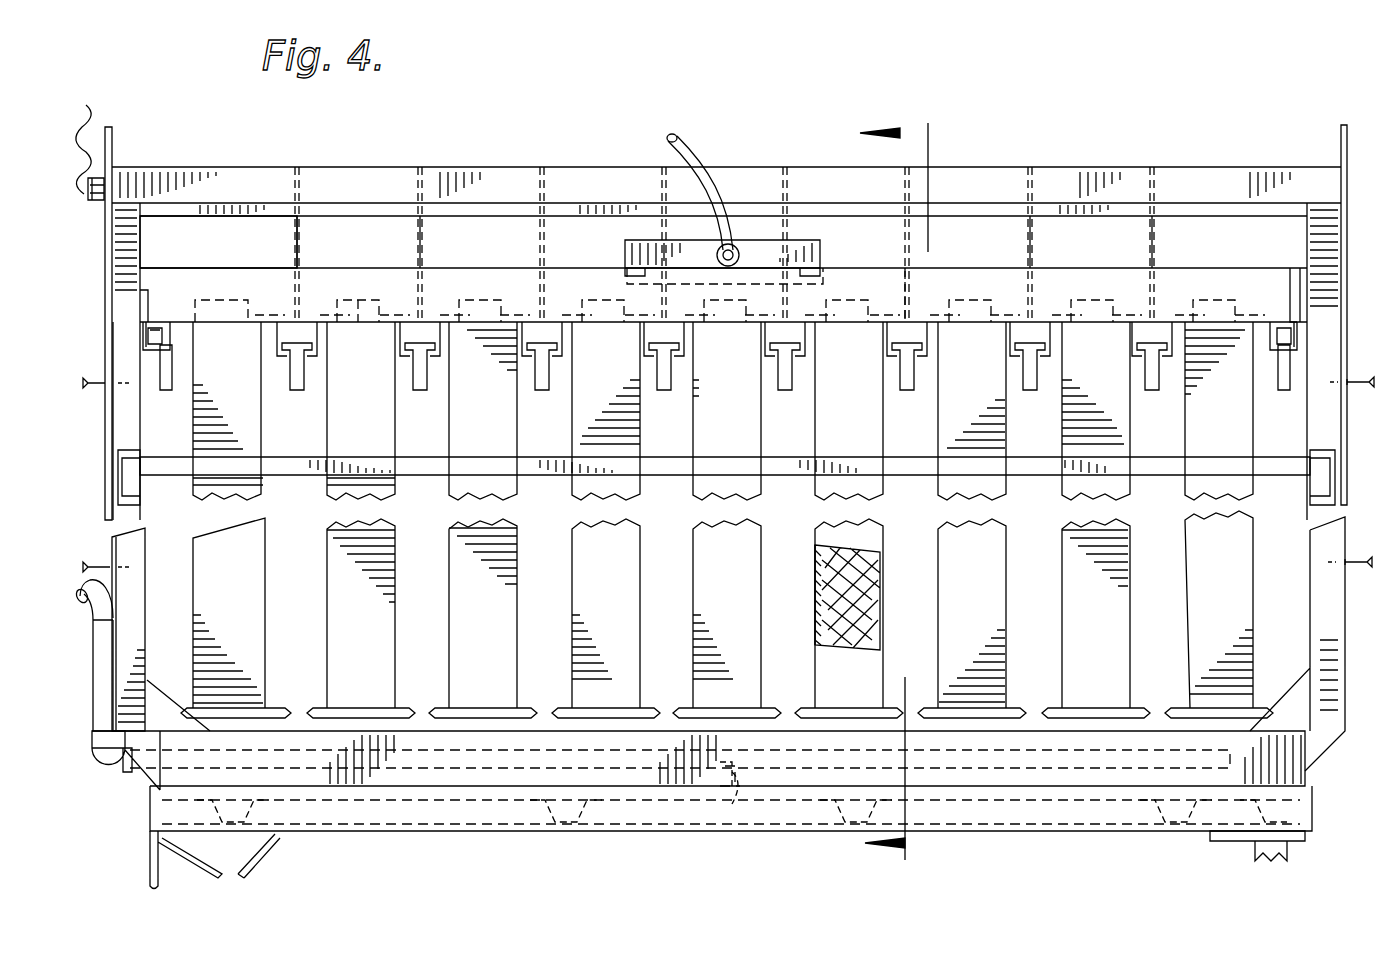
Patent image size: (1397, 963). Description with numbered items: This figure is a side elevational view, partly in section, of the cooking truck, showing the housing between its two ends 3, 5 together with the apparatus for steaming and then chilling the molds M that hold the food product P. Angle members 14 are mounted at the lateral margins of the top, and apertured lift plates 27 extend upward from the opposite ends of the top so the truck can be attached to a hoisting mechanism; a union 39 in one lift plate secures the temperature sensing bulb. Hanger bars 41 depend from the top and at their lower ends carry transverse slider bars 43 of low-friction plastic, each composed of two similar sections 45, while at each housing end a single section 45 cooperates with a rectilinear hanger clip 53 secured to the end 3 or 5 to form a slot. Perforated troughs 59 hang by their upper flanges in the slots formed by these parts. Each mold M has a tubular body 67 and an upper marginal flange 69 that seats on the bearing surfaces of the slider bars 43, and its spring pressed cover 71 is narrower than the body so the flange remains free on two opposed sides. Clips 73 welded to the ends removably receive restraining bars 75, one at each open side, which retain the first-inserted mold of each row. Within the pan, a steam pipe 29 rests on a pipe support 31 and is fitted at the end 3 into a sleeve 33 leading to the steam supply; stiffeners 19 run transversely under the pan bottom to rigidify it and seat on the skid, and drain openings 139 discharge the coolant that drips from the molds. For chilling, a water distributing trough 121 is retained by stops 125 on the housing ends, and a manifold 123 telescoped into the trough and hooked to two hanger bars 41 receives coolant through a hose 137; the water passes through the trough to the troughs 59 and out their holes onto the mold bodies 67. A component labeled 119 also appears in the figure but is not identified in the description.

The end 3 is at (100, 450).
The end 5 is at (1340, 300).
The angle member 14 is at (187, 238).
The stiffener 19 is at (270, 837).
The lift plate 27 is at (112, 137).
The steam pipe 29 is at (1050, 790).
The pipe support 31 is at (740, 801).
The sleeve 33 is at (115, 770).
The union 39 is at (91, 179).
The hanger bar 41 is at (298, 254).
The slider bar 43 is at (406, 355).
The slider bar section 45 is at (165, 337).
The hanger clip 53 is at (146, 327).
The trough 59 is at (175, 367).
The tubular body 67 is at (883, 605).
The upper marginal flange 69 is at (888, 296).
The spring pressed cover 71 is at (358, 290).
The clip 73 is at (126, 499).
The restraining bar 75 is at (795, 478).
The bolt 119 is at (118, 390).
The distributing trough 121 is at (1190, 256).
The manifold 123 is at (625, 252).
The stop 125 is at (146, 304).
The hose 137 is at (740, 143).
The drain opening 139 is at (1153, 795).
The mold M is at (815, 588).
The food product P is at (878, 554).